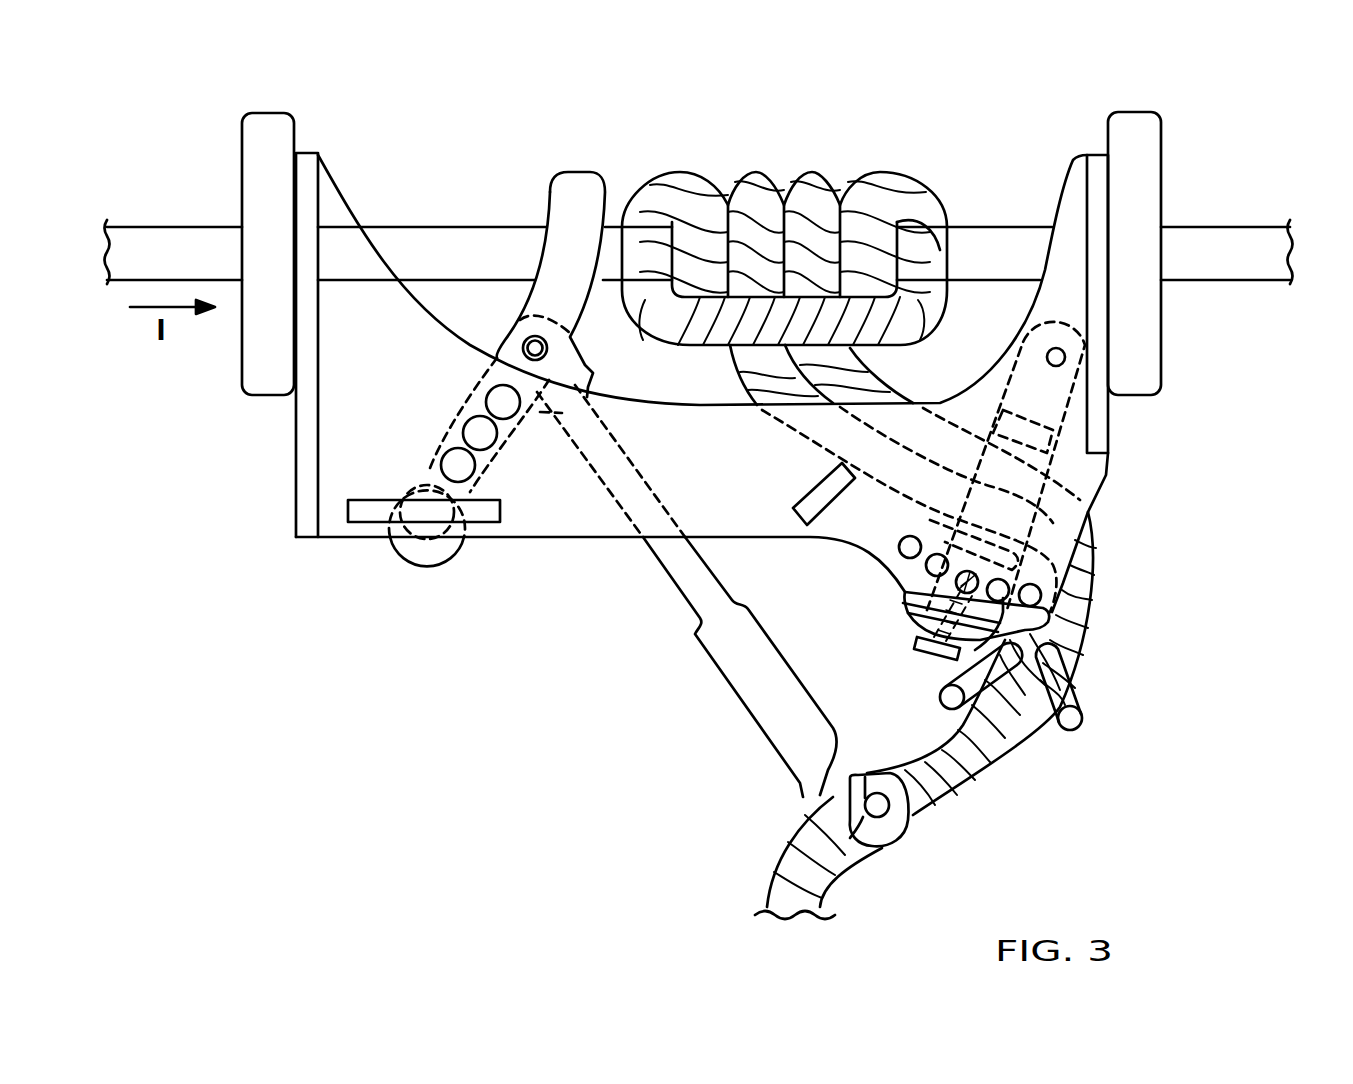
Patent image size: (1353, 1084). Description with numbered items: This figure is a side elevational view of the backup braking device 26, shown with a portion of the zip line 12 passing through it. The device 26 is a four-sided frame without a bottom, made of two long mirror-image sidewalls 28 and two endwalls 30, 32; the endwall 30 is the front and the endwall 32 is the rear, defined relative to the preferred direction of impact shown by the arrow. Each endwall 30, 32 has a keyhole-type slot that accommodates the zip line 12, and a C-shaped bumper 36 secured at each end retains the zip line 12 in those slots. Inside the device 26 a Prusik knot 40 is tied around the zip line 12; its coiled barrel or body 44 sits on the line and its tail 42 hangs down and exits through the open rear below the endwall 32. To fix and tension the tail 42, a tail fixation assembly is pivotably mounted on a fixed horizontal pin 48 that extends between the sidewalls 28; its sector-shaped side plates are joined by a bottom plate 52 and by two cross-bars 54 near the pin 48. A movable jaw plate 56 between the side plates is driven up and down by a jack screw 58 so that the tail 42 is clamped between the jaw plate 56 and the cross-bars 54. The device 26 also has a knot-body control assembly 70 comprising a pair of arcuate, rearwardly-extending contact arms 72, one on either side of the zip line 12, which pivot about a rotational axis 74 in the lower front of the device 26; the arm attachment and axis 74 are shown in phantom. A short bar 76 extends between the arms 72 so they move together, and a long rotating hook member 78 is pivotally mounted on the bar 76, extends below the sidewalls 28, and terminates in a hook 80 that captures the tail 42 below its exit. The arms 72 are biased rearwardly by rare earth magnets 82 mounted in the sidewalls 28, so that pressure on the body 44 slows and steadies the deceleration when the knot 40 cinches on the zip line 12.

The zip line 12 is at (158, 236).
The backup braking device 26 is at (794, 113).
The sidewalls 28 is at (578, 530).
The endwall 30 is at (297, 478).
The endwall 32 is at (1110, 424).
The C-shaped bumper 36 is at (270, 128).
The Prusik knot 40 is at (884, 174).
The tail 42 is at (990, 755).
The body 44 is at (754, 172).
The pin 48 is at (1048, 352).
The bottom plate 52 is at (905, 594).
The cross-bars 54 is at (1027, 423).
The jaw plate 56 is at (930, 520).
The jack screw 58 is at (935, 658).
The knot-body control assembly 70 is at (582, 172).
The contact arms 72 is at (575, 185).
The rotational axis 74 is at (428, 516).
The bar 76 is at (525, 346).
The hook member 78 is at (725, 665).
The hook 80 is at (862, 850).
The rare earth magnets 82 is at (448, 466).